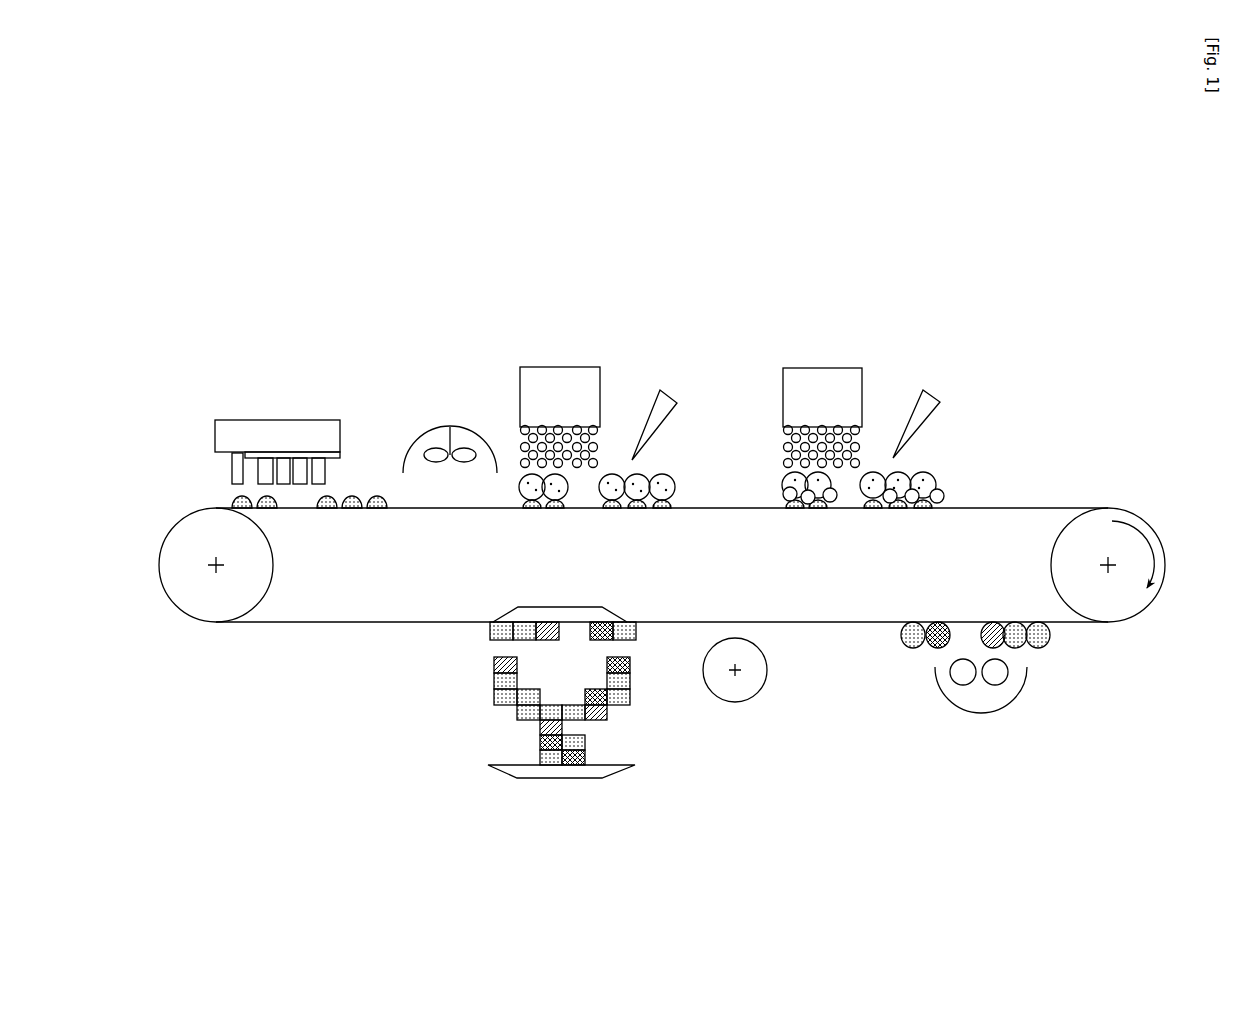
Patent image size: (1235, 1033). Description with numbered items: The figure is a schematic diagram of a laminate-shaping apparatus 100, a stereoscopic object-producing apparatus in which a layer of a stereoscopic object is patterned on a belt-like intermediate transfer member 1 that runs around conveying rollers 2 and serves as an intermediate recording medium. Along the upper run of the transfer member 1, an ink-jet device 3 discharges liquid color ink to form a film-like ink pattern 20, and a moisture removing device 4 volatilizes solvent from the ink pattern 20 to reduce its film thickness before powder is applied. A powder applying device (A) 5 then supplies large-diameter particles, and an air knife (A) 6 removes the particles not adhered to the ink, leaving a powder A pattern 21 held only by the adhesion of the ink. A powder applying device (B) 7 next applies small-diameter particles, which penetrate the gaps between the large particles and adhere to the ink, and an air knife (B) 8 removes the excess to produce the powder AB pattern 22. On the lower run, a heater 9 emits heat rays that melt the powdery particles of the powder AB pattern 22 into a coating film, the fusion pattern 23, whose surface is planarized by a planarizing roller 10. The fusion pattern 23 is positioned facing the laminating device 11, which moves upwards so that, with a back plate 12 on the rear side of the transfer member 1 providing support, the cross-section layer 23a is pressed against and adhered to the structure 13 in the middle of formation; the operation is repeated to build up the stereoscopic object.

The laminate-shaping apparatus 100 is at (820, 240).
The intermediate transfer member 1 is at (332, 622).
The conveying roller 2 is at (193, 597).
The ink-jet device 3 is at (234, 420).
The moisture removing device 4 is at (426, 437).
The powder applying device (A) 5 is at (564, 367).
The air knife (A) 6 is at (660, 390).
The powder applying device (B) 7 is at (830, 368).
The air knife (B) 8 is at (923, 390).
The heater 9 is at (992, 713).
The planarizing roller 10 is at (763, 685).
The laminating device 11 is at (622, 772).
The back plate 12 is at (605, 610).
The structure in the middle of formation 13 is at (477, 716).
The ink pattern 20 is at (364, 520).
The powder A pattern 21 is at (604, 518).
The powder AB pattern 22 is at (864, 518).
The fusion pattern 23 is at (1055, 652).
The cross-section layer 23a is at (643, 654).